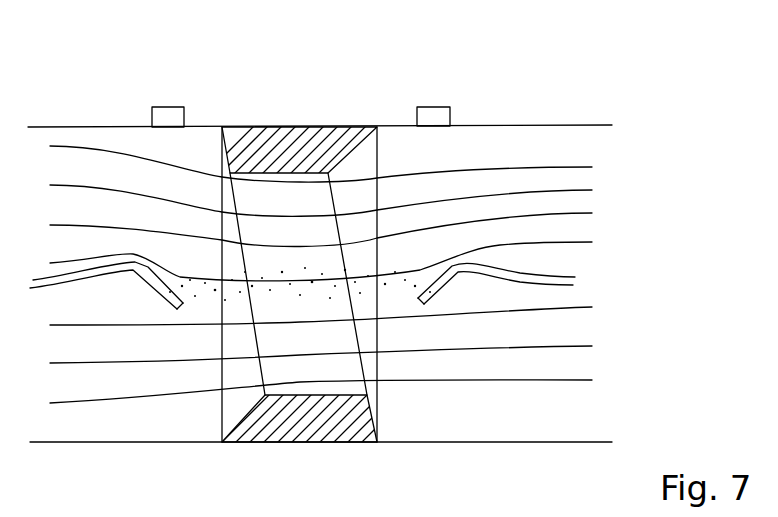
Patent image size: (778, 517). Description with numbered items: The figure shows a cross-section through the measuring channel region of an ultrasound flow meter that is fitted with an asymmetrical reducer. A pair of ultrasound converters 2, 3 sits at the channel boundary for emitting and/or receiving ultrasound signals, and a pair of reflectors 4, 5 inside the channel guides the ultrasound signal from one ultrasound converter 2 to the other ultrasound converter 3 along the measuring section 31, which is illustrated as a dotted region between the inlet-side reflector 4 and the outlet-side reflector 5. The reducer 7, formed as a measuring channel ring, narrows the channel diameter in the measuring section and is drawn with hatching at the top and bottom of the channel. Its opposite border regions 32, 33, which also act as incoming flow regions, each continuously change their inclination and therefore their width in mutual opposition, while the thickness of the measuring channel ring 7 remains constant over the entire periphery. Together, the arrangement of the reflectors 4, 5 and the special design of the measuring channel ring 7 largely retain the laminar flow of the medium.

The ultrasound converter 2 is at (170, 118).
The ultrasound converter 3 is at (432, 113).
The inlet-side reflector 4 is at (167, 283).
The outlet-side reflector 5 is at (440, 272).
The reducer 7 is at (278, 150).
The measuring section 31 is at (300, 278).
The border region 32 is at (233, 398).
The border region 33 is at (373, 387).